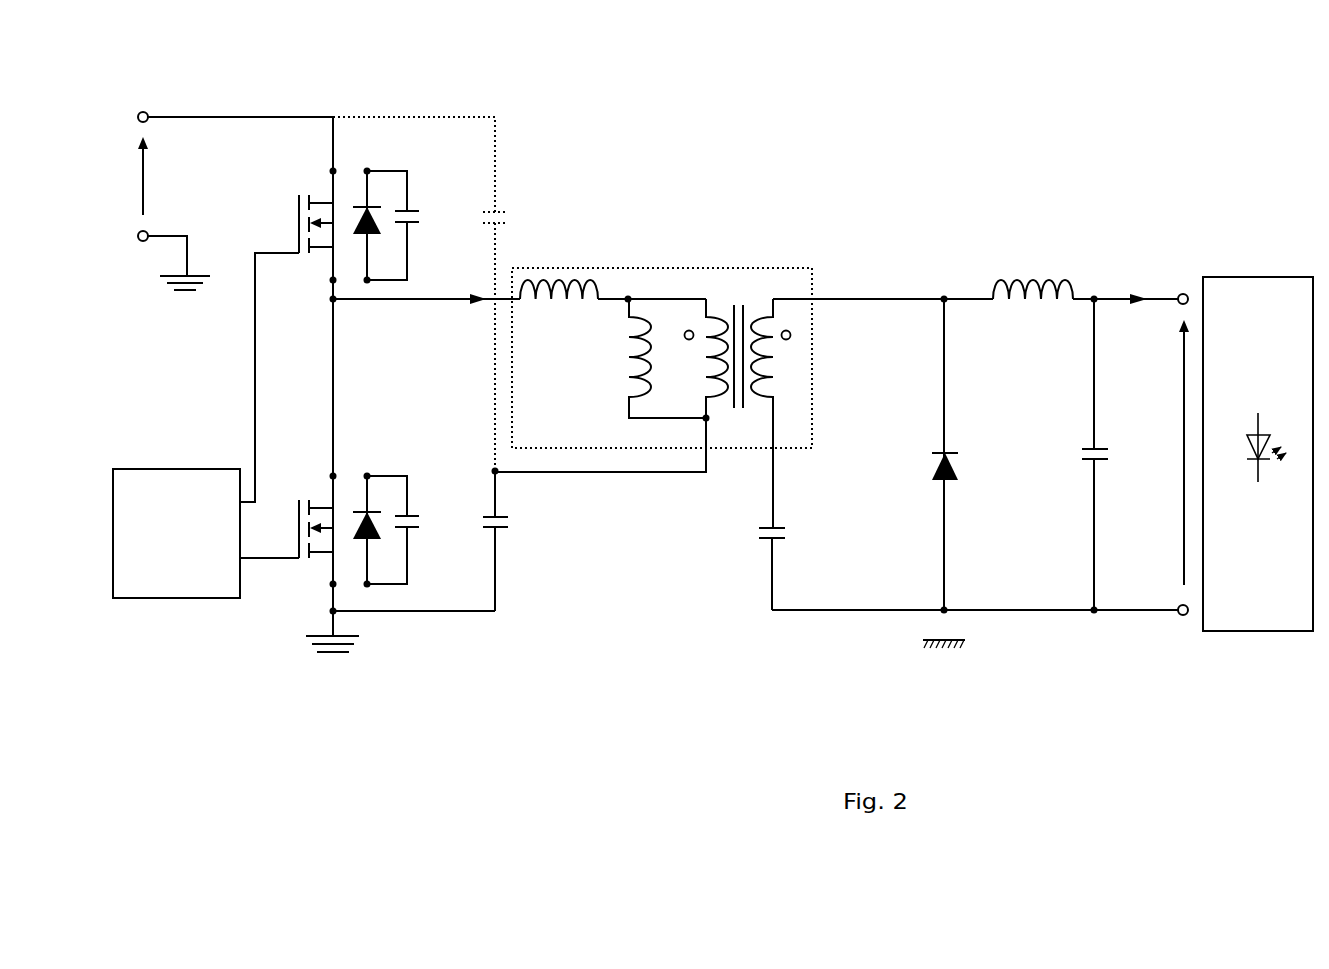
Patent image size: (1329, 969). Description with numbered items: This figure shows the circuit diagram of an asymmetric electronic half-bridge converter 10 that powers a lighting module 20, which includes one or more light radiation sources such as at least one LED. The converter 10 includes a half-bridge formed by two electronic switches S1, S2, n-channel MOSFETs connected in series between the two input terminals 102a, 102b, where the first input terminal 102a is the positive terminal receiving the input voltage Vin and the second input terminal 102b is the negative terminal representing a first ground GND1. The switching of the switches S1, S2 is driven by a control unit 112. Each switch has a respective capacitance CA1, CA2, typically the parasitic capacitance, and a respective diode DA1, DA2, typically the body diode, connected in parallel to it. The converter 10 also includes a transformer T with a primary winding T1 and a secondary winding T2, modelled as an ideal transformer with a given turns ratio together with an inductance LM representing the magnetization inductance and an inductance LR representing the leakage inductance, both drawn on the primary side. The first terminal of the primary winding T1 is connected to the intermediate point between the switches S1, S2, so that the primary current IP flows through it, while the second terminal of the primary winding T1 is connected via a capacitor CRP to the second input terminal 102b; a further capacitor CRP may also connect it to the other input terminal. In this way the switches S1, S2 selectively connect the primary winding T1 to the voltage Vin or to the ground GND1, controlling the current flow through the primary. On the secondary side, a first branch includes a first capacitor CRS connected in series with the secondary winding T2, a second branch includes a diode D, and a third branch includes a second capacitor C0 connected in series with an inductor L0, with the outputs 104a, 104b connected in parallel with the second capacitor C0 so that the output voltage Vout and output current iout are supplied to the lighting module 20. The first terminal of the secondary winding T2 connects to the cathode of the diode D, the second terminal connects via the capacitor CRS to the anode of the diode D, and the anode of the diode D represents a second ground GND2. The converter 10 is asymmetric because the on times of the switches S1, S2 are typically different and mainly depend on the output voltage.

The electronic converter 10 is at (948, 128).
The lighting module 20 is at (1262, 275).
The first input terminal 102a is at (156, 99).
The second input terminal 102b is at (142, 250).
The output 104a is at (1190, 272).
The output 104b is at (1183, 624).
The control unit 112 is at (186, 592).
The electronic switch S1 is at (314, 189).
The electronic switch S2 is at (314, 494).
The capacitance CA1 is at (416, 199).
The capacitance CA2 is at (416, 512).
The diode DA1 is at (386, 235).
The diode DA2 is at (386, 540).
The capacitor CRP is at (508, 208).
The first capacitor CRS is at (793, 552).
The inductance LR is at (554, 266).
The inductance LM is at (623, 355).
The transformer T is at (747, 368).
The primary winding T1 is at (709, 290).
The secondary winding T2 is at (771, 290).
The diode D is at (927, 453).
The inductor L0 is at (1030, 270).
The second capacitor C0 is at (1072, 453).
The first ground GND1 is at (335, 660).
The second ground GND2 is at (944, 657).
The voltage Vin is at (171, 181).
The output voltage Vout is at (1168, 452).
The primary current IP is at (462, 322).
The output current iout is at (1141, 275).